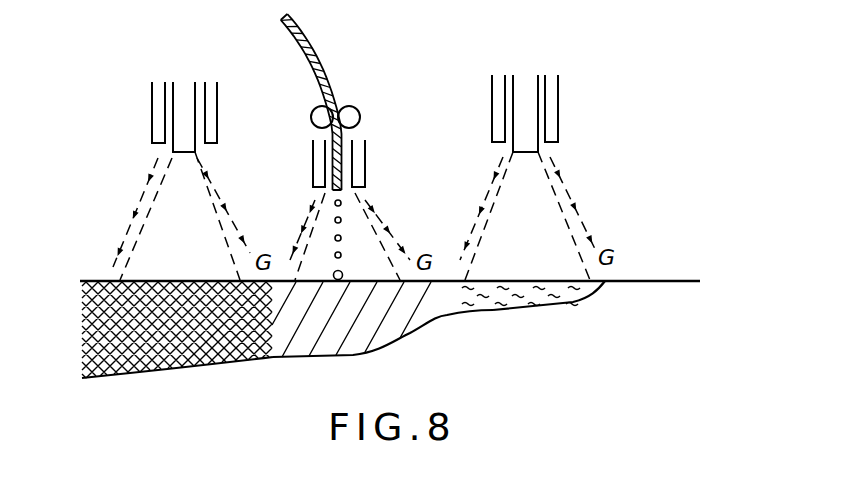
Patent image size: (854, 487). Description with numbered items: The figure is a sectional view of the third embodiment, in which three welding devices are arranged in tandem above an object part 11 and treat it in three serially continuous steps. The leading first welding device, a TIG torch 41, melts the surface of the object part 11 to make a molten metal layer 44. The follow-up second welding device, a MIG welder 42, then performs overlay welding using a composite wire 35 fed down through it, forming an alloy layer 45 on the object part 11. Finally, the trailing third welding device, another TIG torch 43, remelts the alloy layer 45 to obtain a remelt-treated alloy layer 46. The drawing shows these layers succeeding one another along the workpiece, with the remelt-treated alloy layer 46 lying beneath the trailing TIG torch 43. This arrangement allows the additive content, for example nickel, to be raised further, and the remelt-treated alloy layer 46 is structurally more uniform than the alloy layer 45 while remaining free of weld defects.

The object part 11 is at (630, 262).
The composite wire 35 is at (332, 71).
The TIG torch 41 is at (570, 112).
The MIG welder 42 is at (365, 120).
The TIG torch 43 is at (148, 127).
The molten metal layer 44 is at (567, 309).
The alloy layer 45 is at (422, 329).
The remelt-treated alloy layer 46 is at (147, 378).